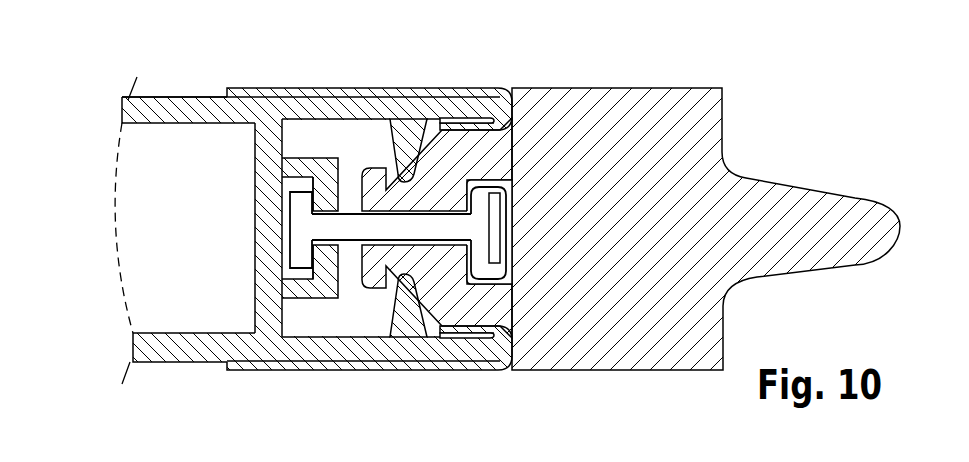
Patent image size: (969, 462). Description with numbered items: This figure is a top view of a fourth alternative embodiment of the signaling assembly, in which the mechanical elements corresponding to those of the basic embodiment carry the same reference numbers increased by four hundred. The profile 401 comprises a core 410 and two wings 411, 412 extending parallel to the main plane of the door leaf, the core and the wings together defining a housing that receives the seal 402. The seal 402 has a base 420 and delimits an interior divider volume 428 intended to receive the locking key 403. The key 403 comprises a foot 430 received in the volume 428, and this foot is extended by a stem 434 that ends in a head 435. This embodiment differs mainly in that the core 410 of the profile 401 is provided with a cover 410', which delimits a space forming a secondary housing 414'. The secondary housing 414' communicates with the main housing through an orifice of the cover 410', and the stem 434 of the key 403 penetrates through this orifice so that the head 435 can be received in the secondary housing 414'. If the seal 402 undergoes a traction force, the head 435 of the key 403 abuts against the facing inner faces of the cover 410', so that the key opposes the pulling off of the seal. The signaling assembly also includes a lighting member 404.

The profile 401 is at (168, 212).
The seal 402 is at (631, 213).
The locking key 403 is at (436, 210).
The lighting member 404 is at (509, 182).
The core of the profile 410 is at (317, 232).
The cover 410' is at (320, 109).
The wing of the profile 411 is at (186, 92).
The wing of the profile 412 is at (160, 368).
The secondary housing 414' is at (298, 333).
The base of the seal 420 is at (706, 229).
The interior volume of the seal 428 is at (495, 276).
The foot of the key 430 is at (453, 302).
The stem of the key 434 is at (373, 234).
The head of the key 435 is at (287, 211).